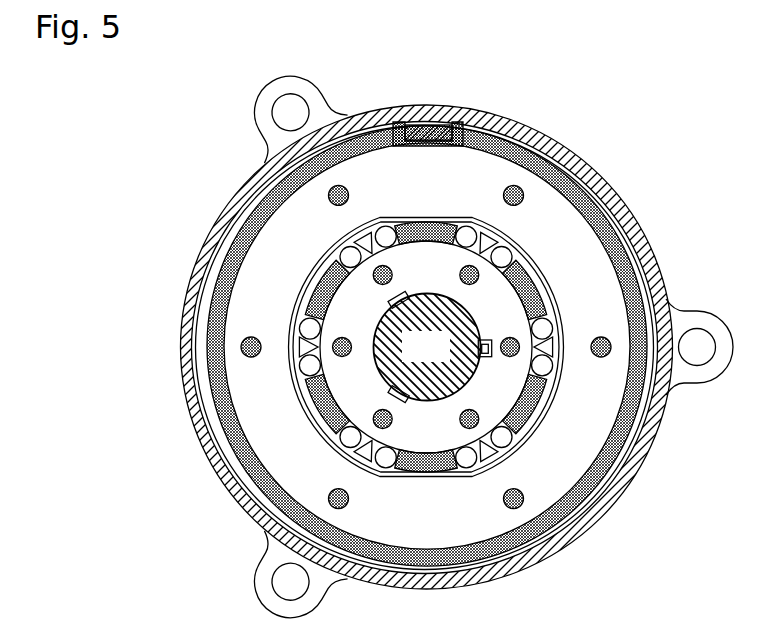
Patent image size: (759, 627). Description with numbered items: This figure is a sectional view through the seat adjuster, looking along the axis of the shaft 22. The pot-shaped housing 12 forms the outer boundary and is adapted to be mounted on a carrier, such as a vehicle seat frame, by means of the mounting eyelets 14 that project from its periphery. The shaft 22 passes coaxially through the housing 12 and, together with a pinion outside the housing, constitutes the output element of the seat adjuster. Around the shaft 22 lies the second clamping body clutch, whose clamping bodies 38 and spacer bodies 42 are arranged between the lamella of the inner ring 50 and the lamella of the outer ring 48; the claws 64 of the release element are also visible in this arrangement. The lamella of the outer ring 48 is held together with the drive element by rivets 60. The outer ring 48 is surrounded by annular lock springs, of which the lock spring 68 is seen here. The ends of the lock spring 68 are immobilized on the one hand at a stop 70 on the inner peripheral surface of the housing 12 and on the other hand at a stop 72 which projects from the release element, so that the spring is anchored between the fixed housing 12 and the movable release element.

The housing 12 is at (195, 258).
The mounting eyelets 14 is at (288, 580).
The shaft 22 is at (433, 346).
The clamping bodies 38 is at (387, 233).
The spacer bodies 42 is at (367, 239).
The outer ring 48 is at (583, 240).
The inner ring 50 is at (498, 391).
The rivets 60 is at (255, 358).
The claws 64 is at (429, 466).
The lock spring 68 is at (252, 223).
The stop 70 is at (416, 125).
The stop 72 is at (413, 125).